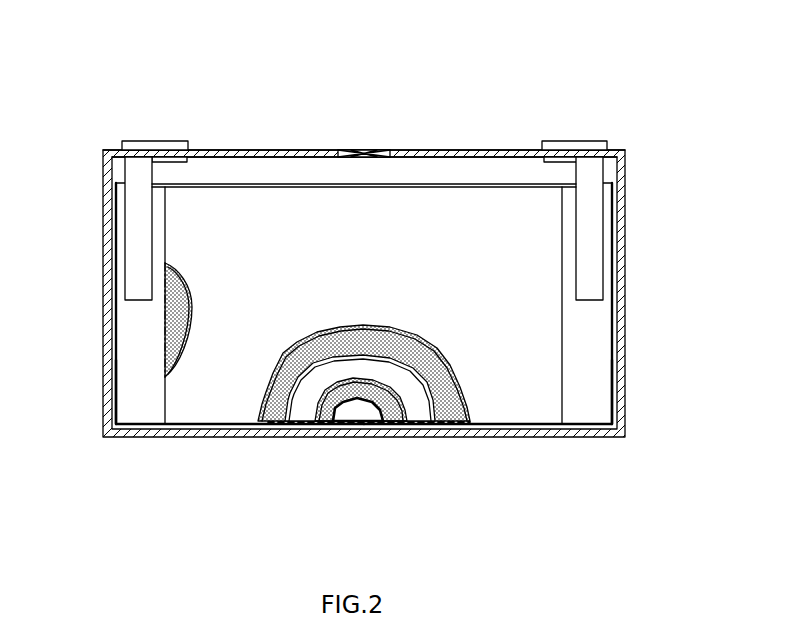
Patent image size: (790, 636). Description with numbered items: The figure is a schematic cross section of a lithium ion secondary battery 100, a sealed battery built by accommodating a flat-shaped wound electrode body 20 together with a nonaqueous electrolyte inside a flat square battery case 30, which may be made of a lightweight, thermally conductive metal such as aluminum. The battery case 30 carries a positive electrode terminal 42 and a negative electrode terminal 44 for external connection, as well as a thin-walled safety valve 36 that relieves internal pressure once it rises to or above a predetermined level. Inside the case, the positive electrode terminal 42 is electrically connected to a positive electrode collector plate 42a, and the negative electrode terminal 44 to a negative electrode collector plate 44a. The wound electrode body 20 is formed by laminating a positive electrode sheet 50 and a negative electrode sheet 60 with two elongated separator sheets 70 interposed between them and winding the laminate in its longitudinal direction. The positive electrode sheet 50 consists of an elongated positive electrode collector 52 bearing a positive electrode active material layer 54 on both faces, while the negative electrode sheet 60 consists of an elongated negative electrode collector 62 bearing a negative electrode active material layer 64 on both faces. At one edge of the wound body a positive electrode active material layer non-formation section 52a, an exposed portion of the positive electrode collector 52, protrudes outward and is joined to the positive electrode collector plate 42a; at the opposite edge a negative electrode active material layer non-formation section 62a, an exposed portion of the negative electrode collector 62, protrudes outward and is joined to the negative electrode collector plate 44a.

The lithium ion secondary battery 100 is at (644, 76).
The wound electrode body 20 is at (288, 181).
The battery case 30 is at (630, 257).
The safety valve 36 is at (373, 150).
The positive electrode terminal 42 is at (165, 140).
The positive electrode collector plate 42a is at (137, 222).
The negative electrode terminal 44 is at (583, 140).
The negative electrode collector plate 44a is at (593, 217).
The positive electrode sheet 50 is at (275, 420).
The positive electrode collector 52 is at (115, 325).
The positive electrode active material layer non-formation section 52a is at (130, 393).
The positive electrode active material layer 54 is at (192, 300).
The negative electrode sheet 60 is at (330, 417).
The negative electrode collector 62 is at (612, 325).
The negative electrode active material layer non-formation section 62a is at (593, 388).
The negative electrode active material layer 64 is at (358, 409).
The separator sheet 70 is at (207, 373).